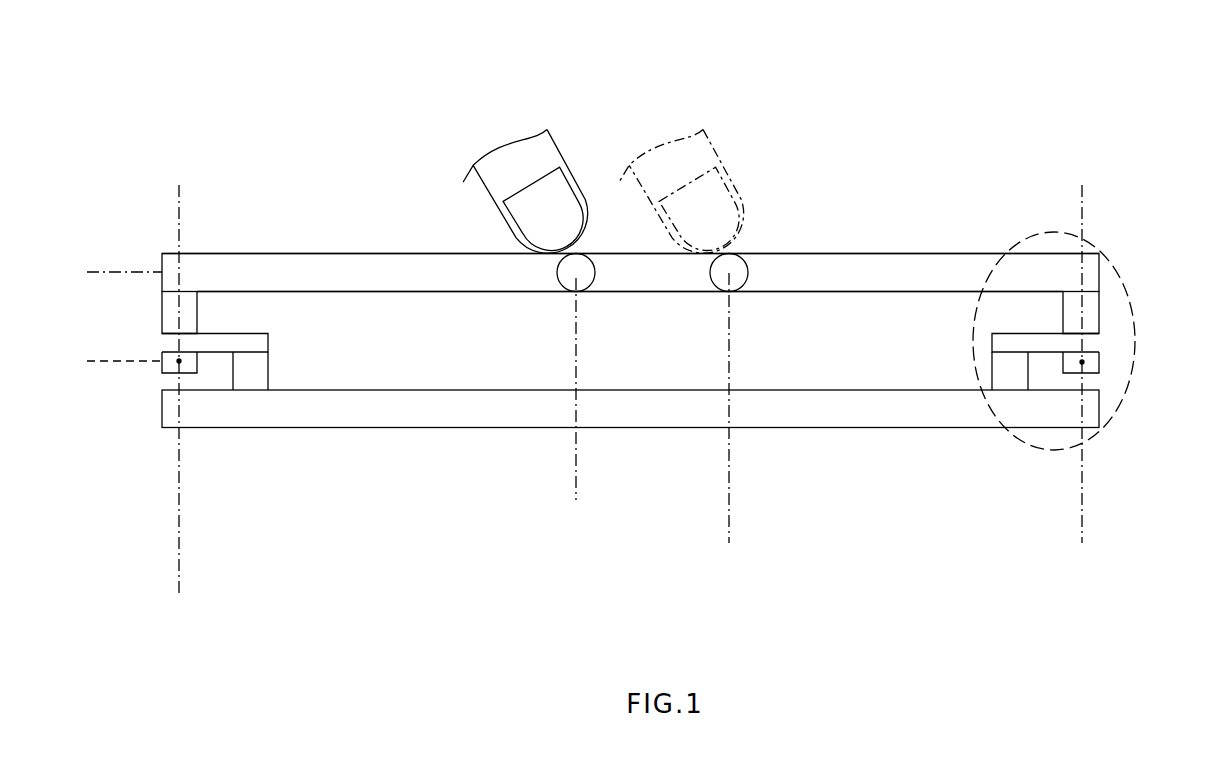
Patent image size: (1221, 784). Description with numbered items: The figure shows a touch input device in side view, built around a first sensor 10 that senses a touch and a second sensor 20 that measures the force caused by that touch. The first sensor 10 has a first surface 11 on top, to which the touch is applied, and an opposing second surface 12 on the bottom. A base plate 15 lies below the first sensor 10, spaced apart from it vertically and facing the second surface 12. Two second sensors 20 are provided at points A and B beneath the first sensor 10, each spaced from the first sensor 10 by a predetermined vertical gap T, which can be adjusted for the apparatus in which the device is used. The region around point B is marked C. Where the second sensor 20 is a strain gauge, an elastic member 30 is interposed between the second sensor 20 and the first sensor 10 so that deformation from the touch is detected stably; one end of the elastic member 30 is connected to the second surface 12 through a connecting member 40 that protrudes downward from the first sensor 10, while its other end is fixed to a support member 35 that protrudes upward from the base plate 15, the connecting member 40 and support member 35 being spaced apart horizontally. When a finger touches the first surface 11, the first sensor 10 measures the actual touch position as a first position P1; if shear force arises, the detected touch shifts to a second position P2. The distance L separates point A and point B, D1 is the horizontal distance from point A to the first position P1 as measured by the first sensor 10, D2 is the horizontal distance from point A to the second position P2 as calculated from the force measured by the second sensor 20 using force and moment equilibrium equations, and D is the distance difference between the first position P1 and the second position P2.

The first sensor 10 is at (925, 263).
The first surface 11 is at (838, 253).
The second surface 12 is at (840, 292).
The base plate 15 is at (833, 415).
The second sensor 20 is at (162, 366).
The elastic member 30 is at (1002, 340).
The support member 35 is at (1002, 368).
The connecting member 40 is at (1092, 305).
The point A is at (179, 361).
The point B is at (1082, 362).
The enlarged region C is at (1050, 231).
The first position P1 is at (568, 277).
The second position P2 is at (719, 275).
The gap T is at (103, 272).
The horizontal distance from point A to the first position D1 is at (575, 483).
The distance difference D is at (576, 483).
The horizontal distance from point A to the second position D2 is at (729, 530).
The distance between point A and point B L is at (179, 575).